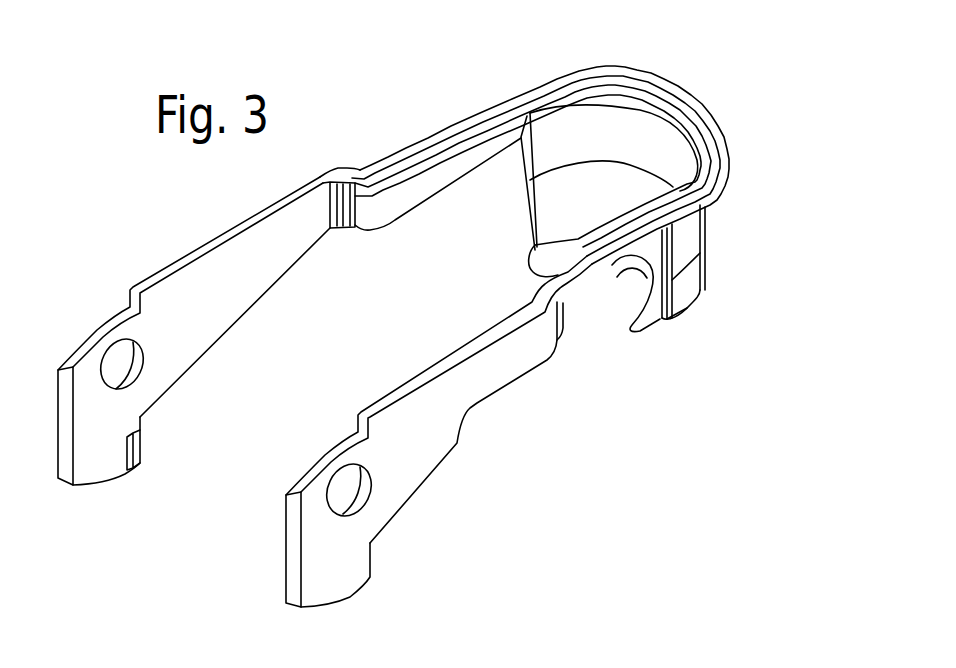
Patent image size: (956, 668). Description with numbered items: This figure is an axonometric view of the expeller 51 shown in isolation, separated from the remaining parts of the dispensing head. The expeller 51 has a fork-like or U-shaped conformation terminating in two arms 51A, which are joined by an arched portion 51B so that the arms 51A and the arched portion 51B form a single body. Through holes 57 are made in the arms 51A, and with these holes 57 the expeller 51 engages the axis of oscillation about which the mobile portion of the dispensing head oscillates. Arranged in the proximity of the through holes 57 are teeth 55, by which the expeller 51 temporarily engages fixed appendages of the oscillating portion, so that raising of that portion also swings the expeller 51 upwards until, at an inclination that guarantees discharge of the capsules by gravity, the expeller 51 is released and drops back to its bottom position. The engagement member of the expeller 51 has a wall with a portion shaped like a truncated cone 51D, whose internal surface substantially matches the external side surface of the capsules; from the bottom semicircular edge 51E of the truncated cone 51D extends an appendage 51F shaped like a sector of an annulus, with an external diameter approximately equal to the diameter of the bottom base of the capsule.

The expeller 51 is at (431, 320).
The arms 51A is at (215, 312).
The arched portion 51B is at (667, 77).
The truncated-cone portion 51D is at (563, 187).
The bottom semicircular edge 51E is at (697, 300).
The appendage 51F is at (624, 293).
The teeth 55 is at (130, 452).
The through holes 57 is at (133, 381).